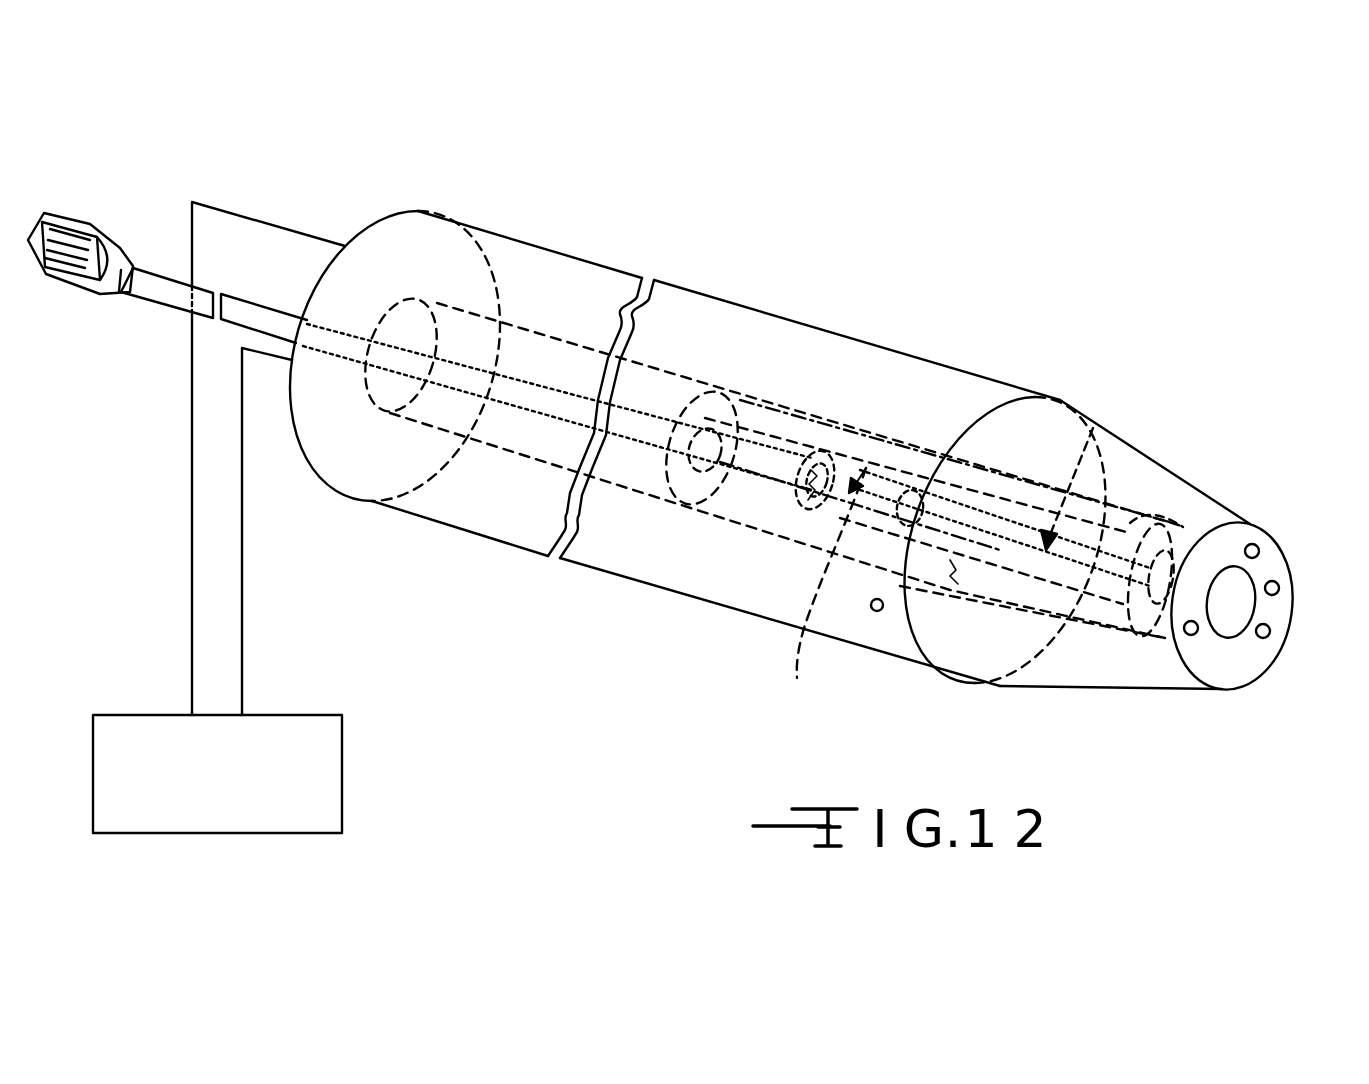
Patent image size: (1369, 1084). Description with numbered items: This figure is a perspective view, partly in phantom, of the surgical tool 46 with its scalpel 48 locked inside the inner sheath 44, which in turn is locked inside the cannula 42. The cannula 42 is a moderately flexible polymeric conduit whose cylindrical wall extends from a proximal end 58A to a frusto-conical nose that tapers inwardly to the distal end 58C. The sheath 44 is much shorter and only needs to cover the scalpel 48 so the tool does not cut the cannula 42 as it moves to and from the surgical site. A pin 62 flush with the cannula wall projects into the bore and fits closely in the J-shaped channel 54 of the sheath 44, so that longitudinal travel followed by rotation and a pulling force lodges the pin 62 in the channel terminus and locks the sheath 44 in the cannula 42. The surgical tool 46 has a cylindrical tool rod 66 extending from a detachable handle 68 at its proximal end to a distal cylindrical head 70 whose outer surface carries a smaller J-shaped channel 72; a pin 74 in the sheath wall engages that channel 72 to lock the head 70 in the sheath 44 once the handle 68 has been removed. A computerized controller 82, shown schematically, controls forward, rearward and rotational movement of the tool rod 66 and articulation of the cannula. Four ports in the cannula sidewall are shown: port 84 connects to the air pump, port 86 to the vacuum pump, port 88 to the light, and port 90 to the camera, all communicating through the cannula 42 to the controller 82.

The cannula 42 is at (972, 370).
The inner sheath 44 is at (1182, 480).
The surgical tool 46 is at (525, 382).
The scalpel 48 is at (975, 560).
The J-shaped channel 54 is at (1110, 455).
The proximal end 58A is at (403, 242).
The distal end 58C is at (1243, 660).
The pin 62 is at (877, 612).
The tool rod 66 is at (153, 300).
The detachable handle 68 is at (68, 218).
The head 70 is at (831, 582).
The J-shaped channel 72 is at (866, 468).
The pin 74 is at (832, 522).
The computerized controller 82 is at (310, 742).
The port 84 is at (1256, 547).
The port 86 is at (1279, 588).
The port 88 is at (1268, 634).
The port 90 is at (1189, 635).